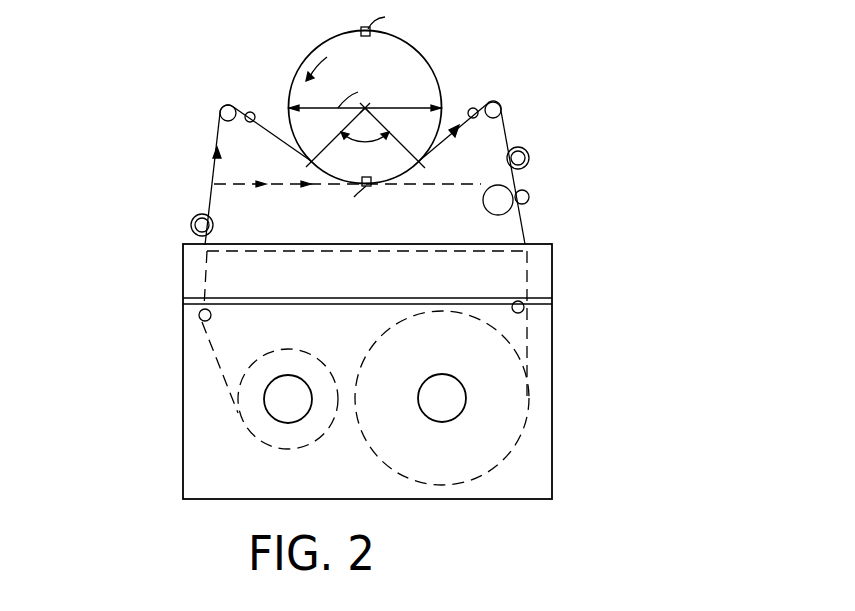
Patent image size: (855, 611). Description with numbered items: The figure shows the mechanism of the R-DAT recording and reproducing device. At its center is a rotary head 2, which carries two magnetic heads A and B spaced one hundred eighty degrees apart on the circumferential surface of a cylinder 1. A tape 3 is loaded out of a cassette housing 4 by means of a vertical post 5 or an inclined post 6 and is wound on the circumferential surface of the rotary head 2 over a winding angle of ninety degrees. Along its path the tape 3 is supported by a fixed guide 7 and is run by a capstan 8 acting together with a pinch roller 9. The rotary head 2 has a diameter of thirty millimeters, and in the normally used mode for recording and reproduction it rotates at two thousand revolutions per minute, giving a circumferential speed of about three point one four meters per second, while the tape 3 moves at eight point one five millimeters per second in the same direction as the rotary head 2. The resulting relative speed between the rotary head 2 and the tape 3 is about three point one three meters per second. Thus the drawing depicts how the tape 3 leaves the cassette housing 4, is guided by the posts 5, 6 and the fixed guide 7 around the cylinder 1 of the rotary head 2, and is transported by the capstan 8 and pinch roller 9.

The cylinder 1 is at (425, 59).
The rotary head 2 is at (439, 82).
The tape 3 is at (508, 133).
The cassette housing 4 is at (552, 422).
The vertical post 5 is at (233, 105).
The inclined post 6 is at (252, 123).
The fixed guide 7 is at (192, 220).
The capstan 8 is at (529, 200).
The pinch roller 9 is at (506, 211).